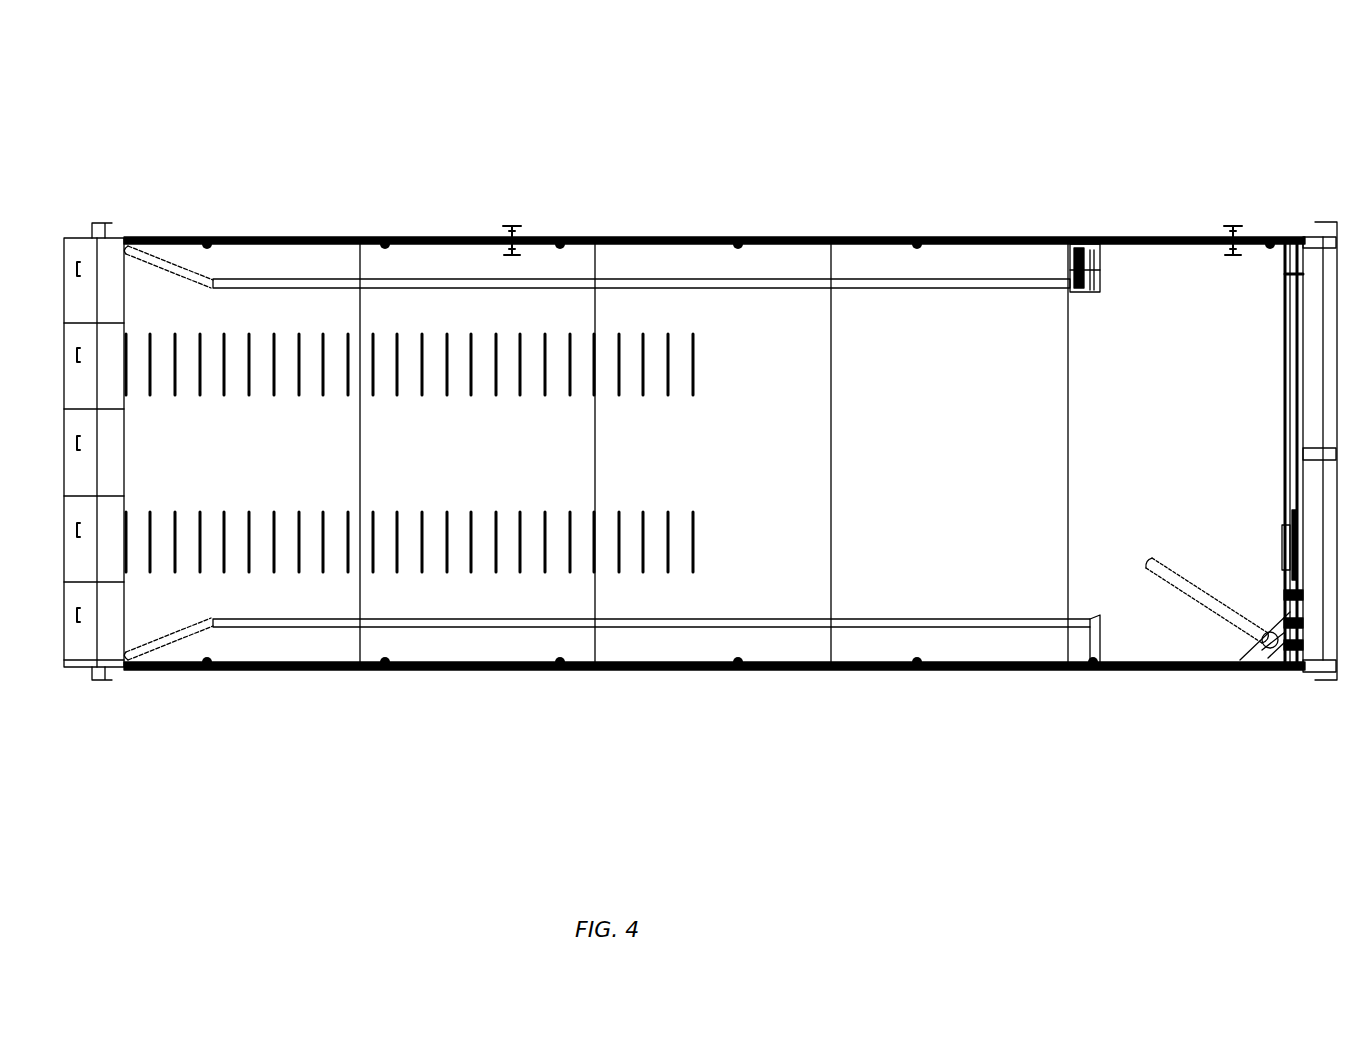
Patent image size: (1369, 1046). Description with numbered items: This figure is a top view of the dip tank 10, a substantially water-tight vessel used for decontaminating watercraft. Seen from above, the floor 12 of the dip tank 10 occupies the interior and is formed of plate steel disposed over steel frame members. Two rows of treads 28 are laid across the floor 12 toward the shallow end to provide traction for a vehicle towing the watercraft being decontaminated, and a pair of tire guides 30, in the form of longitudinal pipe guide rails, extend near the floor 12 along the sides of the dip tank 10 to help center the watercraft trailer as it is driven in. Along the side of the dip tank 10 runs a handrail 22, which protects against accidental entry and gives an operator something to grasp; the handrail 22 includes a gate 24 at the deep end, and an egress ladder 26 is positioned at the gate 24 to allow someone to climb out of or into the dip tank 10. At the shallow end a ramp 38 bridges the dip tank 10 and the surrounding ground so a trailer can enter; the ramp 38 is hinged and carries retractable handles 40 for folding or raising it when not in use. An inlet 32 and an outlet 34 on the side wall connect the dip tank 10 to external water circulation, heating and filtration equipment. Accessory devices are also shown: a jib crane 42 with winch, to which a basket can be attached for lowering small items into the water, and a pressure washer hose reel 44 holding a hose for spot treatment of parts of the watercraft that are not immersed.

The dip tank 10 is at (305, 133).
The floor 12 is at (894, 412).
The handrail 22 is at (775, 237).
The gate 24 is at (1295, 530).
The egress ladder 26 is at (1282, 555).
The treads 28 is at (398, 378).
The tire guides 30 is at (943, 283).
The inlet 32 is at (510, 232).
The outlet 34 is at (1230, 228).
The ramp 38 is at (72, 660).
The handles 40 is at (80, 288).
The jib crane 42 is at (1148, 563).
The pressure washer hose reel 44 is at (1075, 237).